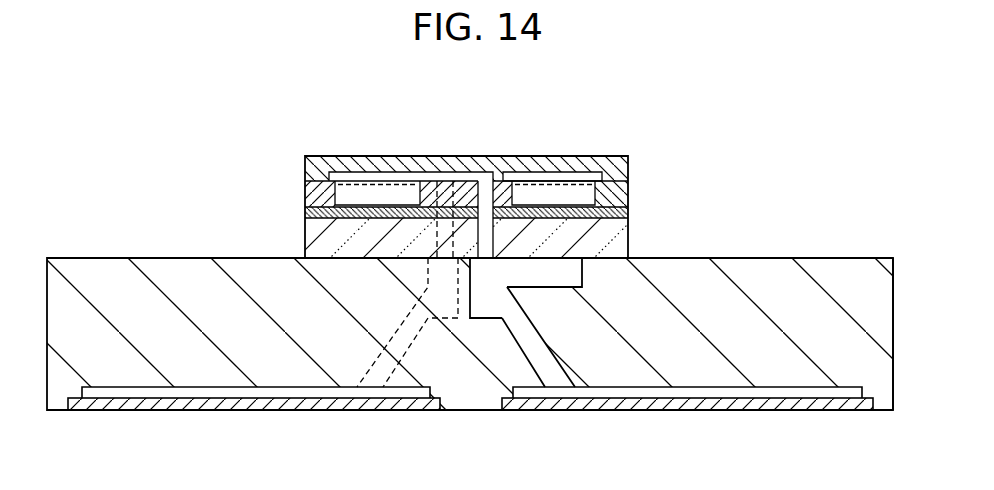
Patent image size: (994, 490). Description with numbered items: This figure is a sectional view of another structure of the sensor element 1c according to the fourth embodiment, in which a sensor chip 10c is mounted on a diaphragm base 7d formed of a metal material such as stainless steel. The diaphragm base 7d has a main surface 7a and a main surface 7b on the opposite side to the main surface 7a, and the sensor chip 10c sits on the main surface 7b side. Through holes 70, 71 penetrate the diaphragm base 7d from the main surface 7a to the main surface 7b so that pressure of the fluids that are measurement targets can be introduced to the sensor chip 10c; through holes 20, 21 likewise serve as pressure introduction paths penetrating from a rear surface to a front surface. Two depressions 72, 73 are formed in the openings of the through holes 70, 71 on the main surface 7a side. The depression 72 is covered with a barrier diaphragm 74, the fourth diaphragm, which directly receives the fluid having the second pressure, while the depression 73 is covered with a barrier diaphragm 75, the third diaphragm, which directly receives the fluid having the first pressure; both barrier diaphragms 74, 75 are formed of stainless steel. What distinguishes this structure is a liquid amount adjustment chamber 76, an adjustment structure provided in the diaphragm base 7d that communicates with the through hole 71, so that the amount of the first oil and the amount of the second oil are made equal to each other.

The sensor element 1c is at (338, 134).
The sensor chip 10c is at (250, 153).
The through hole 20 is at (440, 235).
The through hole 21 is at (487, 240).
The main surface 7a is at (880, 410).
The main surface 7b is at (813, 258).
The diaphragm base 7d is at (868, 272).
The through hole 70 is at (418, 333).
The through hole 71 is at (535, 342).
The depression 72 is at (207, 392).
The depression 73 is at (810, 393).
The barrier diaphragm 74 is at (262, 404).
The barrier diaphragm 75 is at (697, 403).
The liquid amount adjustment chamber 76 is at (587, 279).